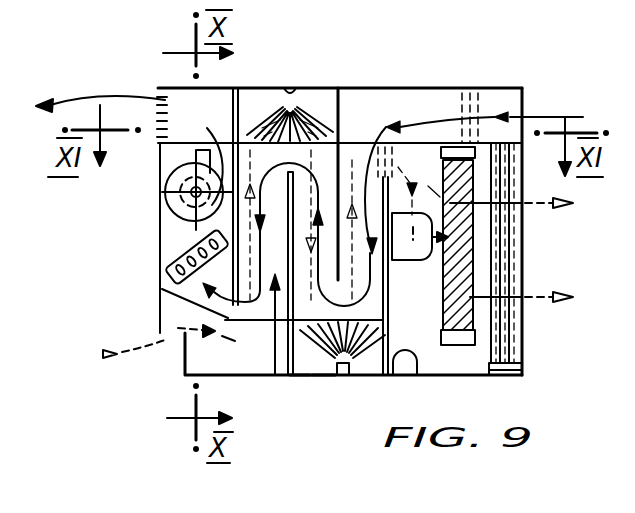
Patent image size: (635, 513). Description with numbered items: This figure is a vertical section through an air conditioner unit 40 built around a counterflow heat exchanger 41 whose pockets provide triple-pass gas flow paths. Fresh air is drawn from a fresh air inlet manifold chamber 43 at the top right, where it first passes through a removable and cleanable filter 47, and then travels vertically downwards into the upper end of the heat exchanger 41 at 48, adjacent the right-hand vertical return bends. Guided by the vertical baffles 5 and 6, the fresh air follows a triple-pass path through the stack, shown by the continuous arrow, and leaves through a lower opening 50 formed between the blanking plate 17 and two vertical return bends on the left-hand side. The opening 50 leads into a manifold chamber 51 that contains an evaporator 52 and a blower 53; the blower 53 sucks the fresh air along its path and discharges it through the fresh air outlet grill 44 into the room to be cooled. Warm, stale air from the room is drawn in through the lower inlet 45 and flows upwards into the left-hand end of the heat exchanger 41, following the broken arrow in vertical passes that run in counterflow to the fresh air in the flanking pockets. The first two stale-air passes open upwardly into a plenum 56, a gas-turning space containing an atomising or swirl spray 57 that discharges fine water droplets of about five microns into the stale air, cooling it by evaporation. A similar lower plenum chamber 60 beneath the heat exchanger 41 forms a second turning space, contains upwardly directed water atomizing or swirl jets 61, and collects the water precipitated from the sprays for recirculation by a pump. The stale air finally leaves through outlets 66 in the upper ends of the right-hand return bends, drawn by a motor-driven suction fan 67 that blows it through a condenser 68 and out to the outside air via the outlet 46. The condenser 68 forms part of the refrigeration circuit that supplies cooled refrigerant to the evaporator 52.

The vertical baffle 5 is at (342, 280).
The vertical baffle 6 is at (283, 240).
The blanking plate 17 is at (243, 88).
The air conditioner unit 40 is at (137, 203).
The heat exchanger 41 is at (295, 378).
The fresh air inlet manifold chamber 43 is at (505, 110).
The fresh air outlet grill 44 is at (210, 131).
The lower inlet 45 is at (180, 340).
The outlet 46 is at (507, 281).
The filter 47 is at (462, 90).
The fresh air entry point 48 is at (493, 180).
The lower opening 50 is at (218, 304).
The manifold chamber 51 is at (162, 253).
The evaporator 52 is at (163, 305).
The blower 53 is at (170, 174).
The plenum 56 is at (378, 177).
The atomising or swirl spray 57 is at (330, 100).
The lower plenum chamber 60 is at (320, 378).
The water atomizing or swirl jets 61 is at (347, 378).
The outlets 66 is at (482, 86).
The motor-driven suction fan 67 is at (465, 275).
The condenser 68 is at (513, 357).